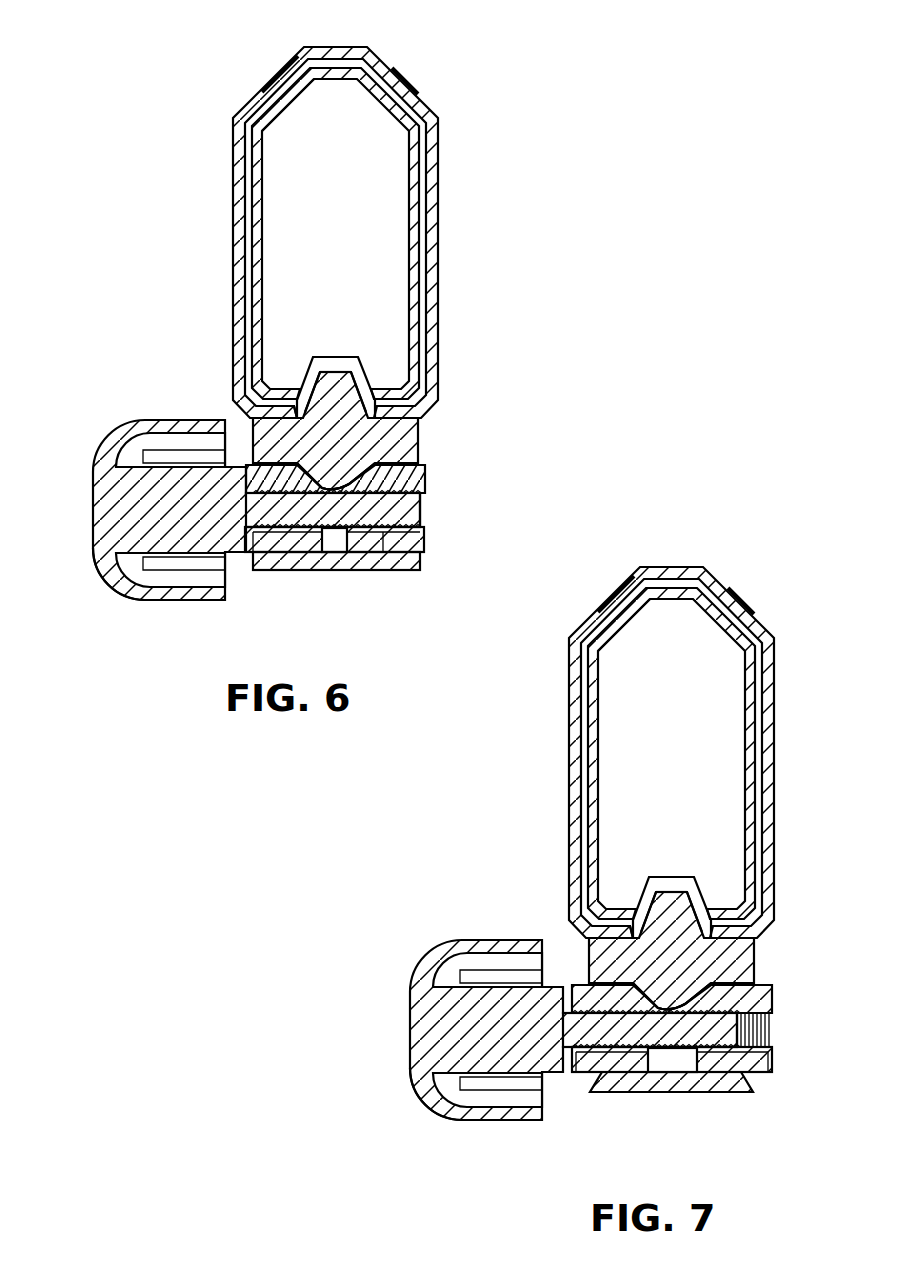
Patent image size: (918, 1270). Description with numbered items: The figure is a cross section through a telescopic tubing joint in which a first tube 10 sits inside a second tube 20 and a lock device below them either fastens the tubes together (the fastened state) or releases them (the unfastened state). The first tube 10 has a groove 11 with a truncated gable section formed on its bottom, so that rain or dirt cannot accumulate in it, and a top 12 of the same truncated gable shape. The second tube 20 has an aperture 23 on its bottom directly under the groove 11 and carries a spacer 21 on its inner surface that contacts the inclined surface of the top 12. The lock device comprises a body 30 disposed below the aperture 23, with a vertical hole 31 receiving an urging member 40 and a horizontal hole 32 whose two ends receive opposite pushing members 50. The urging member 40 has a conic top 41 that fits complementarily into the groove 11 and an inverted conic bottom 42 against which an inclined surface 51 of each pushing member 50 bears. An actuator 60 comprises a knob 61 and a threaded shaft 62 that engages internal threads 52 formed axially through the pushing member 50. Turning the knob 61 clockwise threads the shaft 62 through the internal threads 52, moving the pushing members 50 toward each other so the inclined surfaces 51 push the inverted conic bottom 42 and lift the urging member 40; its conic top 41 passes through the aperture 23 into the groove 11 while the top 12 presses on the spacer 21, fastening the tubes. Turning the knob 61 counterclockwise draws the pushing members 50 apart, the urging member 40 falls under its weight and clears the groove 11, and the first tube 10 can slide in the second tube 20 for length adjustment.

In FIG. 6, the first tube 10 is at (257, 157).
In FIG. 7, the first tube 10 is at (593, 678).
In FIG. 6, the groove 11 is at (337, 373).
In FIG. 7, the groove 11 is at (673, 893).
In FIG. 6, the top 12 is at (293, 97).
In FIG. 7, the top 12 is at (629, 617).
In FIG. 6, the second tube 20 is at (437, 163).
In FIG. 7, the second tube 20 is at (773, 683).
In FIG. 6, the spacer 21 is at (293, 77).
In FIG. 7, the spacer 21 is at (629, 597).
In FIG. 6, the aperture 23 is at (293, 408).
In FIG. 7, the aperture 23 is at (629, 928).
In FIG. 6, the body 30 is at (423, 568).
In FIG. 7, the body 30 is at (759, 1088).
In FIG. 6, the vertical hole 31 is at (380, 427).
In FIG. 7, the vertical hole 31 is at (716, 947).
In FIG. 6, the horizontal hole 32 is at (290, 557).
In FIG. 7, the horizontal hole 32 is at (626, 1077).
In FIG. 6, the urging member 40 is at (370, 440).
In FIG. 7, the urging member 40 is at (706, 960).
In FIG. 6, the conic top 41 is at (373, 383).
In FIG. 7, the conic top 41 is at (709, 903).
In FIG. 6, the inverted conic bottom 42 is at (373, 470).
In FIG. 7, the inverted conic bottom 42 is at (709, 990).
In FIG. 6, the pushing member 50 is at (252, 543).
In FIG. 7, the pushing member 50 is at (590, 1065).
In FIG. 6, the inclined surface 51 is at (363, 477).
In FIG. 7, the inclined surface 51 is at (603, 997).
In FIG. 6, the internal threads 52 is at (347, 542).
In FIG. 7, the internal threads 52 is at (690, 1066).
In FIG. 6, the actuator 60 is at (92, 511).
In FIG. 7, the actuator 60 is at (409, 1036).
In FIG. 6, the knob 61 is at (107, 580).
In FIG. 7, the knob 61 is at (425, 1103).
In FIG. 6, the threaded shaft 62 is at (412, 510).
In FIG. 7, the threaded shaft 62 is at (725, 1033).